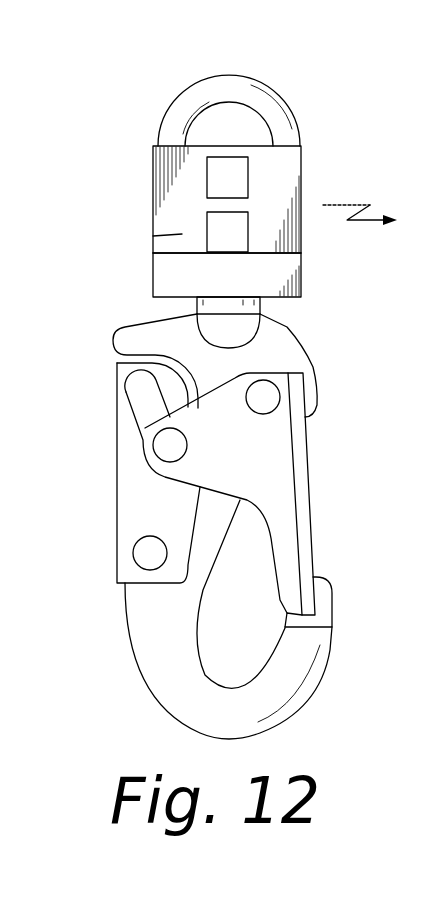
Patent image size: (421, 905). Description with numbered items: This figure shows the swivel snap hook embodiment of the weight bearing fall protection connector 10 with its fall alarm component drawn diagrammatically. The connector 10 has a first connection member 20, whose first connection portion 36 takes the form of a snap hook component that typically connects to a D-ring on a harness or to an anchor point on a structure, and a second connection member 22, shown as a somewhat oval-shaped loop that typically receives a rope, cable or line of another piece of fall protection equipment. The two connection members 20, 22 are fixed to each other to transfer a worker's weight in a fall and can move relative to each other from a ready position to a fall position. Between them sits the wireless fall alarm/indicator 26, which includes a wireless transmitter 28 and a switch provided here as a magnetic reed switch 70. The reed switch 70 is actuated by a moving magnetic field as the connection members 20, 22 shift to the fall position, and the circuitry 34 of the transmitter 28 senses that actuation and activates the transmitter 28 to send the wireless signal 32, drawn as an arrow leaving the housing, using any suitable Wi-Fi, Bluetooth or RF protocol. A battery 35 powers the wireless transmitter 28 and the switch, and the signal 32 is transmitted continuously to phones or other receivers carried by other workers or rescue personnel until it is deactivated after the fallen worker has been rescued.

The fall protection coupling/connector 10 is at (135, 81).
The first connection member 20 is at (110, 600).
The second connection member 22 is at (294, 91).
The wireless fall alarm/indicator 26 is at (321, 157).
The wireless transmitter 28 is at (153, 236).
The wireless signal 32 is at (355, 221).
The circuitry 34 is at (219, 243).
The battery 35 is at (219, 189).
The first connection portion 36 is at (339, 563).
The magnetic reed switch 70 is at (218, 289).